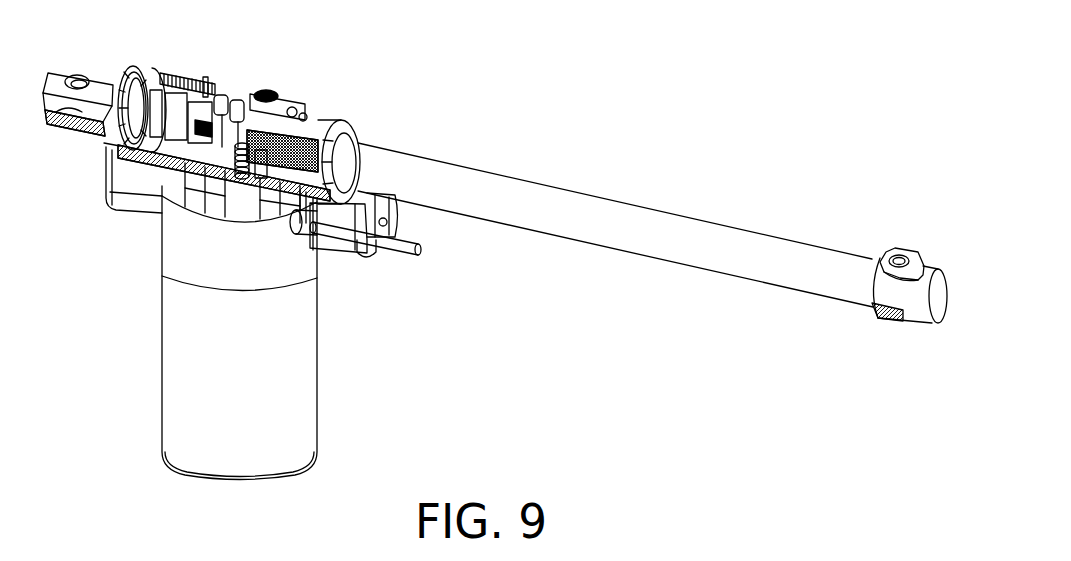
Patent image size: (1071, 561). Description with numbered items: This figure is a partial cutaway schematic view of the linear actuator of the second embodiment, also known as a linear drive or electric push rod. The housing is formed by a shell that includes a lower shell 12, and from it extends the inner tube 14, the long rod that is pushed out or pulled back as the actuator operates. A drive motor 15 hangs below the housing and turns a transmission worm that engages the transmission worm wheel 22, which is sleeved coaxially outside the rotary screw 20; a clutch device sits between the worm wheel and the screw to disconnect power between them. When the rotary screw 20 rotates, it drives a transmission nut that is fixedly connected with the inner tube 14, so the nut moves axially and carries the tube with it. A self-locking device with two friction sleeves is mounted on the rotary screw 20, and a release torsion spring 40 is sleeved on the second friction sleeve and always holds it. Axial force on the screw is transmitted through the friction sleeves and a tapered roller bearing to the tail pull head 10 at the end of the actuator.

The tail pull head 10 is at (113, 88).
The lower shell 12 is at (118, 207).
The inner tube 14 is at (523, 200).
The drive motor 15 is at (178, 362).
The rotary screw 20 is at (323, 121).
The transmission worm wheel 22 is at (268, 94).
The release torsion spring 40 is at (186, 66).